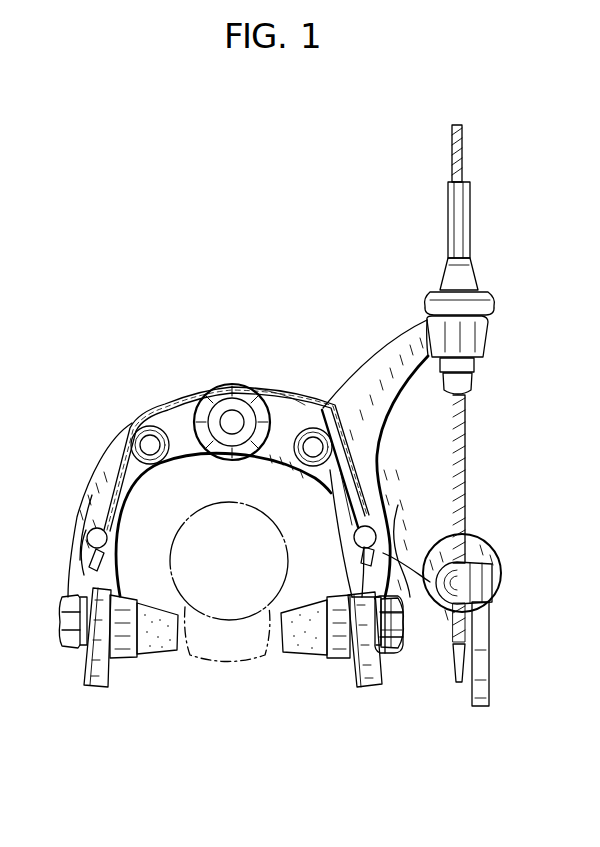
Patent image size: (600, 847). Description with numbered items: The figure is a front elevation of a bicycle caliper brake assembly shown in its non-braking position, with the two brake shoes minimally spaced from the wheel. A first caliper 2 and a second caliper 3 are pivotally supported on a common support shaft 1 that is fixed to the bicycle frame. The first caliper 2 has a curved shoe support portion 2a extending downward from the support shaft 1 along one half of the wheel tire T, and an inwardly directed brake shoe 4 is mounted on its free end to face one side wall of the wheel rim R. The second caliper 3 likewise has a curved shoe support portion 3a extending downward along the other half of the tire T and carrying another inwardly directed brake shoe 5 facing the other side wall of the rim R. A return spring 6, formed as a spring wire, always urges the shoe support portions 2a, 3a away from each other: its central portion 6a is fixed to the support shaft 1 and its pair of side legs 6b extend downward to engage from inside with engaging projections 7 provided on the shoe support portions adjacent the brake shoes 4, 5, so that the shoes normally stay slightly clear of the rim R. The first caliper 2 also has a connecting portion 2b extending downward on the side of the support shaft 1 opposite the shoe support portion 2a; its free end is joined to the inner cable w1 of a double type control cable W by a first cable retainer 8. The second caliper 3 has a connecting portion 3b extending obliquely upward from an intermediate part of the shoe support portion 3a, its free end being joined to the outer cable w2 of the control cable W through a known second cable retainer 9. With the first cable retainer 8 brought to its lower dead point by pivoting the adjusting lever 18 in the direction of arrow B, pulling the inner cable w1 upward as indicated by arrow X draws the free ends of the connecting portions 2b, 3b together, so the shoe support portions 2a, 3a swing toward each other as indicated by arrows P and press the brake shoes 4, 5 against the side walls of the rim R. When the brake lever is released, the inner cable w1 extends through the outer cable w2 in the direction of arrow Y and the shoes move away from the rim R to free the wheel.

The support shaft 1 is at (228, 388).
The first caliper 2 is at (111, 446).
The shoe support portion 2a is at (97, 477).
The connecting portion 2b is at (407, 590).
The second caliper 3 is at (320, 487).
The shoe support portion 3a is at (348, 542).
The connecting portion 3b is at (385, 345).
The brake shoe 4 is at (172, 662).
The brake shoe 5 is at (298, 660).
The return spring 6 is at (180, 400).
The central portion 6a is at (285, 400).
The side legs 6b is at (88, 566).
The engaging projections 7 is at (87, 538).
The first cable retainer 8 is at (480, 572).
The second cable retainer 9 is at (505, 316).
The adjusting lever 18 is at (490, 682).
The wheel tire T is at (184, 537).
The wheel rim R is at (232, 668).
The control cable W is at (443, 236).
The inner cable w1 is at (468, 498).
The outer cable w2 is at (474, 225).